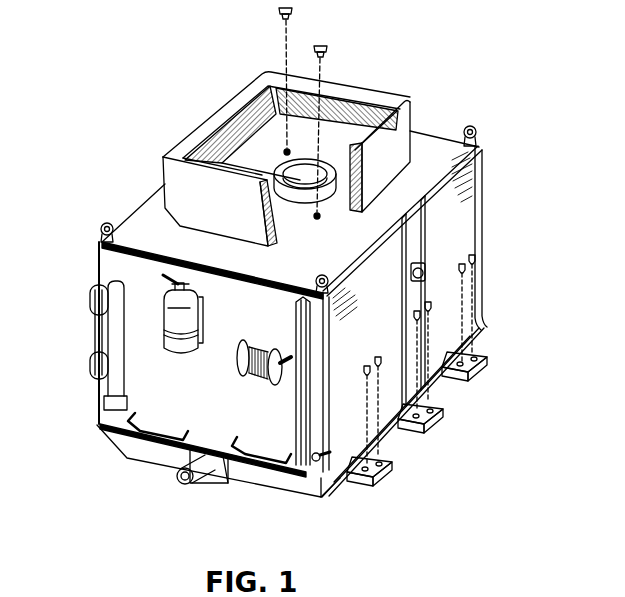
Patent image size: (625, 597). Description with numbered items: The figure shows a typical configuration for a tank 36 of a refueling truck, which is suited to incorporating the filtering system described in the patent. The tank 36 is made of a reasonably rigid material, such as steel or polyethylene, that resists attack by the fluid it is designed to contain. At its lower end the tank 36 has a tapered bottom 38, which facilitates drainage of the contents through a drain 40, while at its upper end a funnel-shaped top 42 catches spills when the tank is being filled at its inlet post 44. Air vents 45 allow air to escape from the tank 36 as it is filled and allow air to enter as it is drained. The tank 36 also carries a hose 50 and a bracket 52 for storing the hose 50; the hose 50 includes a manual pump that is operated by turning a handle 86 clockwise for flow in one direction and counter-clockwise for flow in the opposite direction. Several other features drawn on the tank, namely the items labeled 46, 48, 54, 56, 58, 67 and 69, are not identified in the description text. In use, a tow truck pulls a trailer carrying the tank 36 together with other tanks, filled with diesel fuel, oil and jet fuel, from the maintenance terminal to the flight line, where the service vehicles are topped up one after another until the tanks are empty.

The tank 36 is at (533, 163).
The tapered bottom 38 is at (222, 477).
The drain 40 is at (210, 486).
The funnel-shaped top 42 is at (187, 188).
The inlet post 44 is at (292, 168).
The air vents 45 is at (284, 150).
The eye bolts 46 is at (101, 226).
The hooks 48 is at (136, 430).
The hose 50 is at (113, 402).
The bracket 52 is at (92, 298).
The fire extinguisher 54 is at (186, 322).
The reel 56 is at (239, 377).
The bar 58 is at (294, 405).
The mounting feet 67 is at (388, 474).
The bolts 69 is at (430, 305).
The handle 86 is at (421, 268).